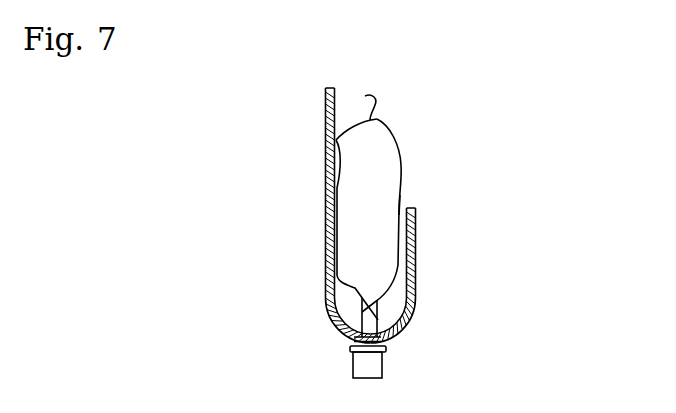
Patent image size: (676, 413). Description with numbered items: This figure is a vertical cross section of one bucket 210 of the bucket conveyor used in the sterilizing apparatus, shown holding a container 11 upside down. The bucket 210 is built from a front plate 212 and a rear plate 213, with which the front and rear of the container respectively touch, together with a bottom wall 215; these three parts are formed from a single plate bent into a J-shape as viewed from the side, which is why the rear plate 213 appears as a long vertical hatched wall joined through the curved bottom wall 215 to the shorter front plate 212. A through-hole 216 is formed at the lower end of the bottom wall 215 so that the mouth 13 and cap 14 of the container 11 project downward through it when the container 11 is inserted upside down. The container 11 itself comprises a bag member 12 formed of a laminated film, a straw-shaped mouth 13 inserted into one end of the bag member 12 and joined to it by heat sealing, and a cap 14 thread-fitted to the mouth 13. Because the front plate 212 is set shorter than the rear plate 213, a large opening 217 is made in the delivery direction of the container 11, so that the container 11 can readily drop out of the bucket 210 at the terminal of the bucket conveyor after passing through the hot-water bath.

The bucket 210 is at (345, 215).
The rear plate 213 is at (324, 228).
The front plate 212 is at (416, 244).
The bottom wall 215 is at (325, 305).
The through-hole 216 is at (397, 327).
The opening 217 is at (414, 207).
The container 11 is at (407, 184).
The bag member 12 is at (400, 207).
The mouth 13 is at (355, 328).
The cap 14 is at (367, 368).